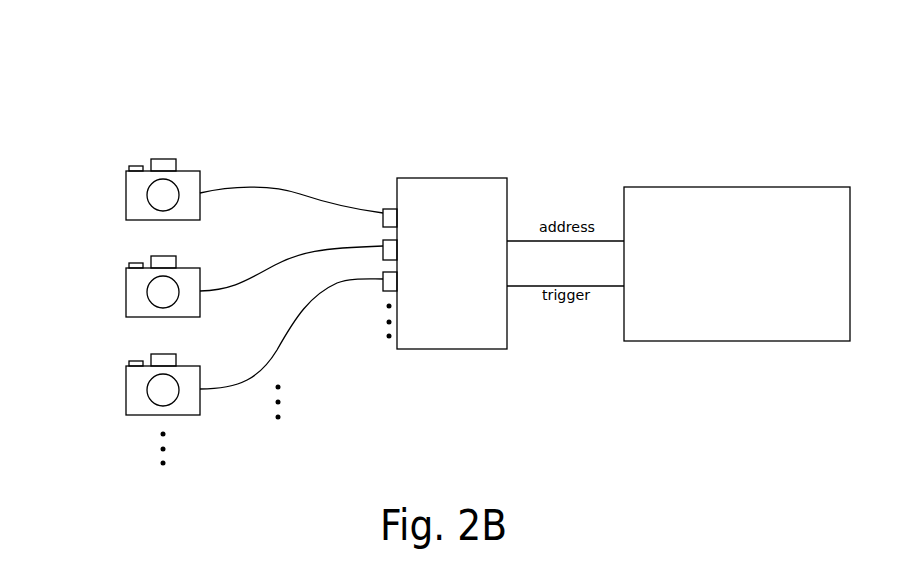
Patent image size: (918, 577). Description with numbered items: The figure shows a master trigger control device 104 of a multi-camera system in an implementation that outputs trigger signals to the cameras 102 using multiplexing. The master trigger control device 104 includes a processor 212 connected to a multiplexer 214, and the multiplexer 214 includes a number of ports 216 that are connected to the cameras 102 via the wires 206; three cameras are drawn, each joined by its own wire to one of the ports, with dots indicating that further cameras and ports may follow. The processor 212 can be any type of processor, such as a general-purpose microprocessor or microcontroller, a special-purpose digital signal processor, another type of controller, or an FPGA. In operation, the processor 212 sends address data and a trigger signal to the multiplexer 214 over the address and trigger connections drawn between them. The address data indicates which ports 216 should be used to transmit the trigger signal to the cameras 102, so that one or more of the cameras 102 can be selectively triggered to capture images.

The camera 102 is at (126, 195).
The master trigger control device 104 is at (747, 67).
The wire 206 is at (269, 188).
The processor 212 is at (738, 341).
The multiplexer 214 is at (457, 349).
The port 216 is at (383, 211).